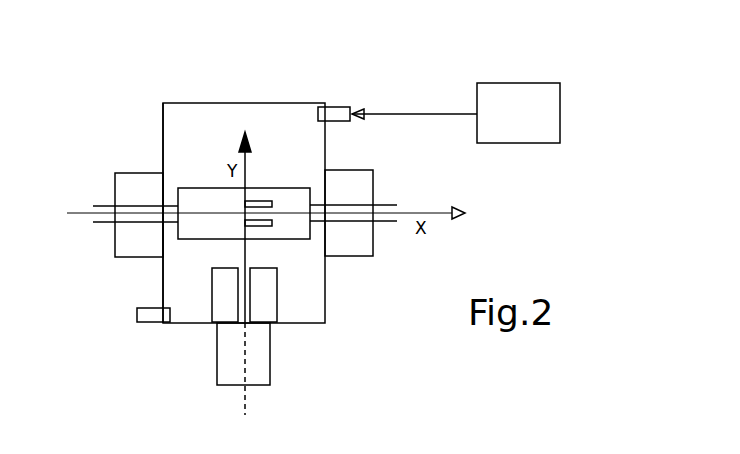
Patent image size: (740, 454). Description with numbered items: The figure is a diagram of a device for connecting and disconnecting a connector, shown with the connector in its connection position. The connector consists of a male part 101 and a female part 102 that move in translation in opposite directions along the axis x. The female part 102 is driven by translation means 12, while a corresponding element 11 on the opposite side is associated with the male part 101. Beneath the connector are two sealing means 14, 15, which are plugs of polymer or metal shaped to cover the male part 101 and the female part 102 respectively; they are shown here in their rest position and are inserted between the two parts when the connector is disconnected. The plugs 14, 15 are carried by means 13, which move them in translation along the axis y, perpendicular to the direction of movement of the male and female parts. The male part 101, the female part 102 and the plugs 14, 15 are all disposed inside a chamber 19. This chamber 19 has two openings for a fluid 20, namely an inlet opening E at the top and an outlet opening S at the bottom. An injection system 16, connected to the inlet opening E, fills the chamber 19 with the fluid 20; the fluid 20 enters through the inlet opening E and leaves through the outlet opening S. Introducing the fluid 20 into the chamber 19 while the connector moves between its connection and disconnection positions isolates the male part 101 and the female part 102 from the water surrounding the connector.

The fluid 20 is at (220, 120).
The chamber 19 is at (163, 120).
The first bearing 11 is at (122, 248).
The means for moving the female part 12 is at (348, 247).
The male part 101 is at (193, 190).
The female part 102 is at (280, 190).
The injection system 16 is at (505, 90).
The inlet opening E is at (397, 102).
The outlet opening S is at (153, 303).
The sealing means 14 is at (222, 308).
The sealing means 15 is at (265, 312).
The means for moving the sealing means 13 is at (260, 370).